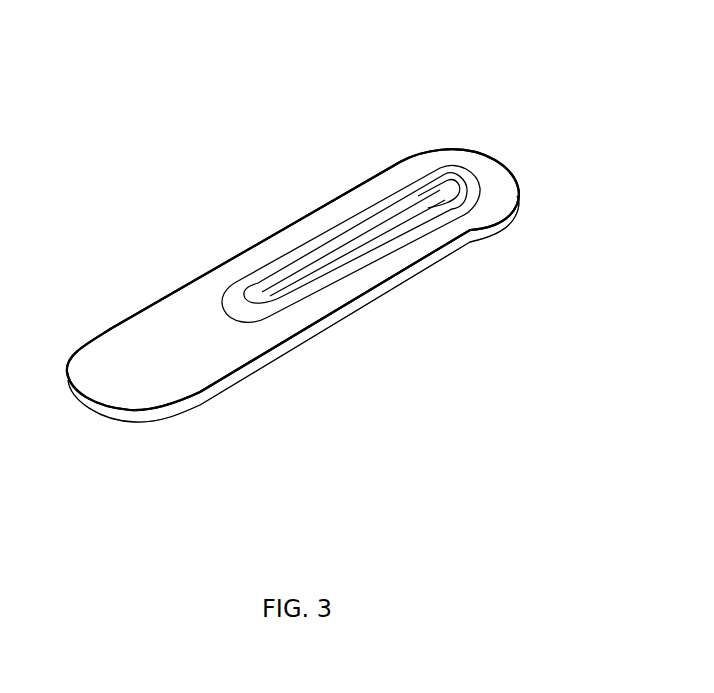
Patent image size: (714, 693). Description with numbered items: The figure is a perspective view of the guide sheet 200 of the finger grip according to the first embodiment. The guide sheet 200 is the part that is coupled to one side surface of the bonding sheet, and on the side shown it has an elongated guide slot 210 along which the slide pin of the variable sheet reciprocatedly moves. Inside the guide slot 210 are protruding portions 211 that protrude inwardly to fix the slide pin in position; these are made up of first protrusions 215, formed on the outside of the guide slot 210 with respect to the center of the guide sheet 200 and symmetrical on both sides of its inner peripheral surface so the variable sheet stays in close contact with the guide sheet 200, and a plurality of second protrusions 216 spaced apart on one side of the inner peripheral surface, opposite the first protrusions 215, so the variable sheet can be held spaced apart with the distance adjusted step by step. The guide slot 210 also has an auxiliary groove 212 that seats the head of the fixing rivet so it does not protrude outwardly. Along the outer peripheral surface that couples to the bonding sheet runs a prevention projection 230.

The guide sheet 200 is at (208, 360).
The guide slot 210 is at (375, 245).
The protruding portions 211 is at (361, 166).
The auxiliary groove 212 is at (244, 280).
The first protrusions 215 is at (404, 183).
The second protrusions 216 is at (324, 258).
The prevention projection 230 is at (108, 312).